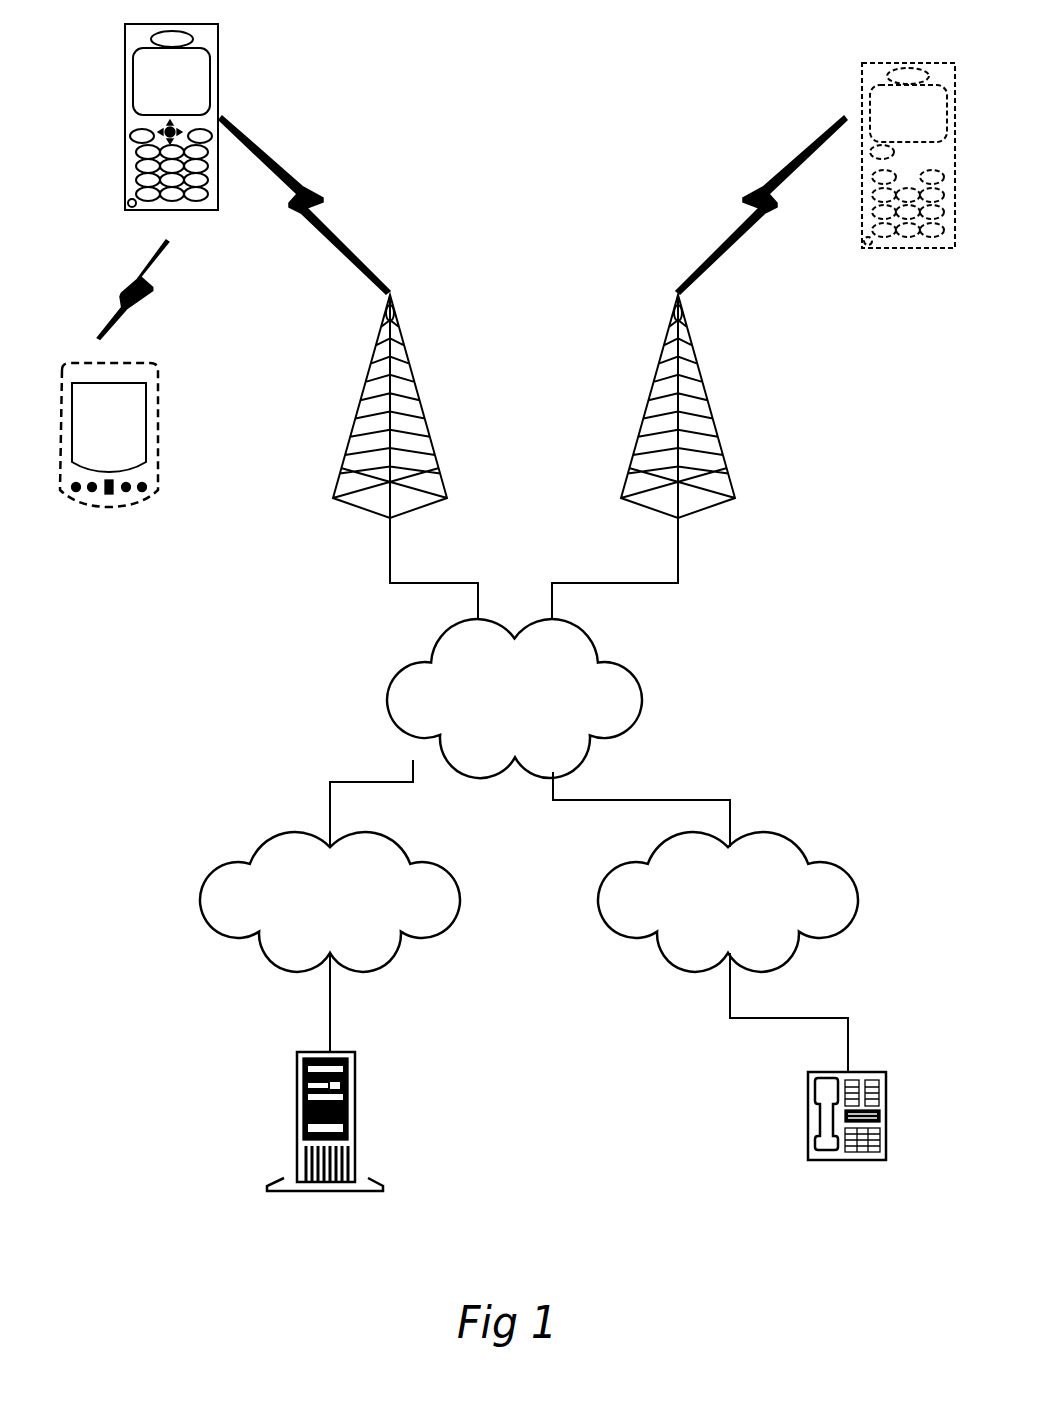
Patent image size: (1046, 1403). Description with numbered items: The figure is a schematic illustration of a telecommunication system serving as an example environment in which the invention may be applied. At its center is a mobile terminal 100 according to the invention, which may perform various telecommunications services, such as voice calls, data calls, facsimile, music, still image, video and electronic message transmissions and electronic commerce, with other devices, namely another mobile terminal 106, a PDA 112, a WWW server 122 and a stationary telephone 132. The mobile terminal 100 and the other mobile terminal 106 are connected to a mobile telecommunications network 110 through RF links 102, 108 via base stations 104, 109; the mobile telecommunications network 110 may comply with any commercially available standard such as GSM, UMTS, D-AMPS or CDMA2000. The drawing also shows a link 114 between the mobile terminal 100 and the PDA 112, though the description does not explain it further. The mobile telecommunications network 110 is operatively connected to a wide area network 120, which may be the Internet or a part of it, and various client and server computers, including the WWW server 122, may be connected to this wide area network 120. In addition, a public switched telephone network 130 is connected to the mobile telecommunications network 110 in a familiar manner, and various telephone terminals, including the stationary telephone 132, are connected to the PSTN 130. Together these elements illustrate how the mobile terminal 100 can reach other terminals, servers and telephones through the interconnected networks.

The mobile terminal 100 is at (124, 82).
The RF link 102 is at (300, 182).
The base station 104 is at (372, 375).
The mobile terminal 106 is at (863, 80).
The RF link 108 is at (766, 184).
The base station 109 is at (660, 380).
The mobile telecommunications network 110 is at (497, 663).
The PDA 112 is at (158, 410).
The short-range radio link 114 is at (120, 308).
The wide area network 120 is at (312, 885).
The WWW server 122 is at (297, 1096).
The public switched telephone network 130 is at (710, 885).
The stationary telephone 132 is at (808, 1095).